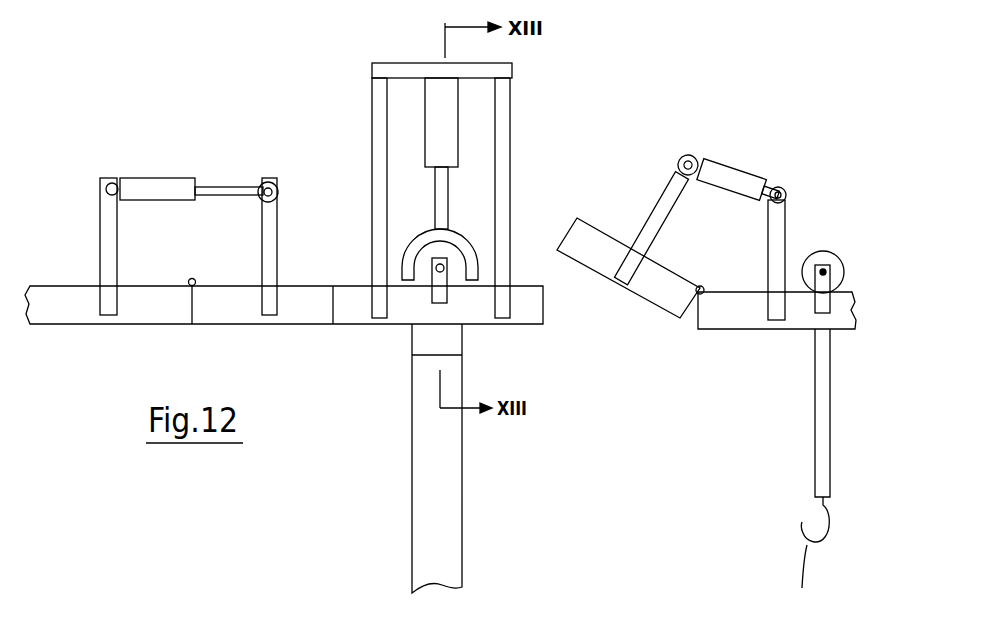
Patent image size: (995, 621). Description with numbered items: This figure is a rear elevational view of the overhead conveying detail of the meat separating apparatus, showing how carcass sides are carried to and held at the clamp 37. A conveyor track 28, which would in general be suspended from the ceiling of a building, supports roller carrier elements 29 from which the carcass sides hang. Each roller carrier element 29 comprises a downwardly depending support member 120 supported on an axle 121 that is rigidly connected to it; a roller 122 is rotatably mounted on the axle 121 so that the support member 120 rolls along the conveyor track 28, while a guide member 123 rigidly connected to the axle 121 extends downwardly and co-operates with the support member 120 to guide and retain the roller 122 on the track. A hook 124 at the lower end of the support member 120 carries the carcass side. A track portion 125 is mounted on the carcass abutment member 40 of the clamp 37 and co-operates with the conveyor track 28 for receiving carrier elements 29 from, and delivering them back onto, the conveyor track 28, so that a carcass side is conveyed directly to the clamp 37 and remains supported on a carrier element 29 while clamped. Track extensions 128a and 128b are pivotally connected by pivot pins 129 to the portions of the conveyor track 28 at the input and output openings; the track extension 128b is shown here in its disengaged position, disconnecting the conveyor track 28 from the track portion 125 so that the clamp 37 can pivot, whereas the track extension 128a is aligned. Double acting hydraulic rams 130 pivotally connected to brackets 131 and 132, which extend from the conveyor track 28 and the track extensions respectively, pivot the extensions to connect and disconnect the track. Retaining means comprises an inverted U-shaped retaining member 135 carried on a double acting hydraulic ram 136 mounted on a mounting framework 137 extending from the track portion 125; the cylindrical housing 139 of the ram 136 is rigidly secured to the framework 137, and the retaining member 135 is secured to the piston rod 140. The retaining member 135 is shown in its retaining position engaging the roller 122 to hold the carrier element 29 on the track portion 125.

The conveyor track 28 is at (65, 307).
The roller carrier element 29 is at (435, 300).
The clamp 37 is at (452, 545).
The carcass abutment member 40 is at (452, 474).
The support member 120 is at (818, 467).
The axle 121 is at (433, 272).
The roller 122 is at (453, 275).
The guide member 123 is at (437, 297).
The hook 124 is at (811, 557).
The track portion 125 is at (532, 317).
The track extension 128a is at (290, 315).
The track extension 128b is at (660, 300).
The pivot pin 129 is at (193, 277).
The double acting hydraulic ram 130 is at (170, 185).
The bracket 131 is at (113, 227).
The bracket 132 is at (272, 237).
The retaining member 135 is at (458, 237).
The double acting hydraulic ram 136 is at (452, 108).
The mounting framework 137 is at (505, 190).
The cylindrical housing 139 is at (432, 107).
The piston rod 140 is at (440, 183).